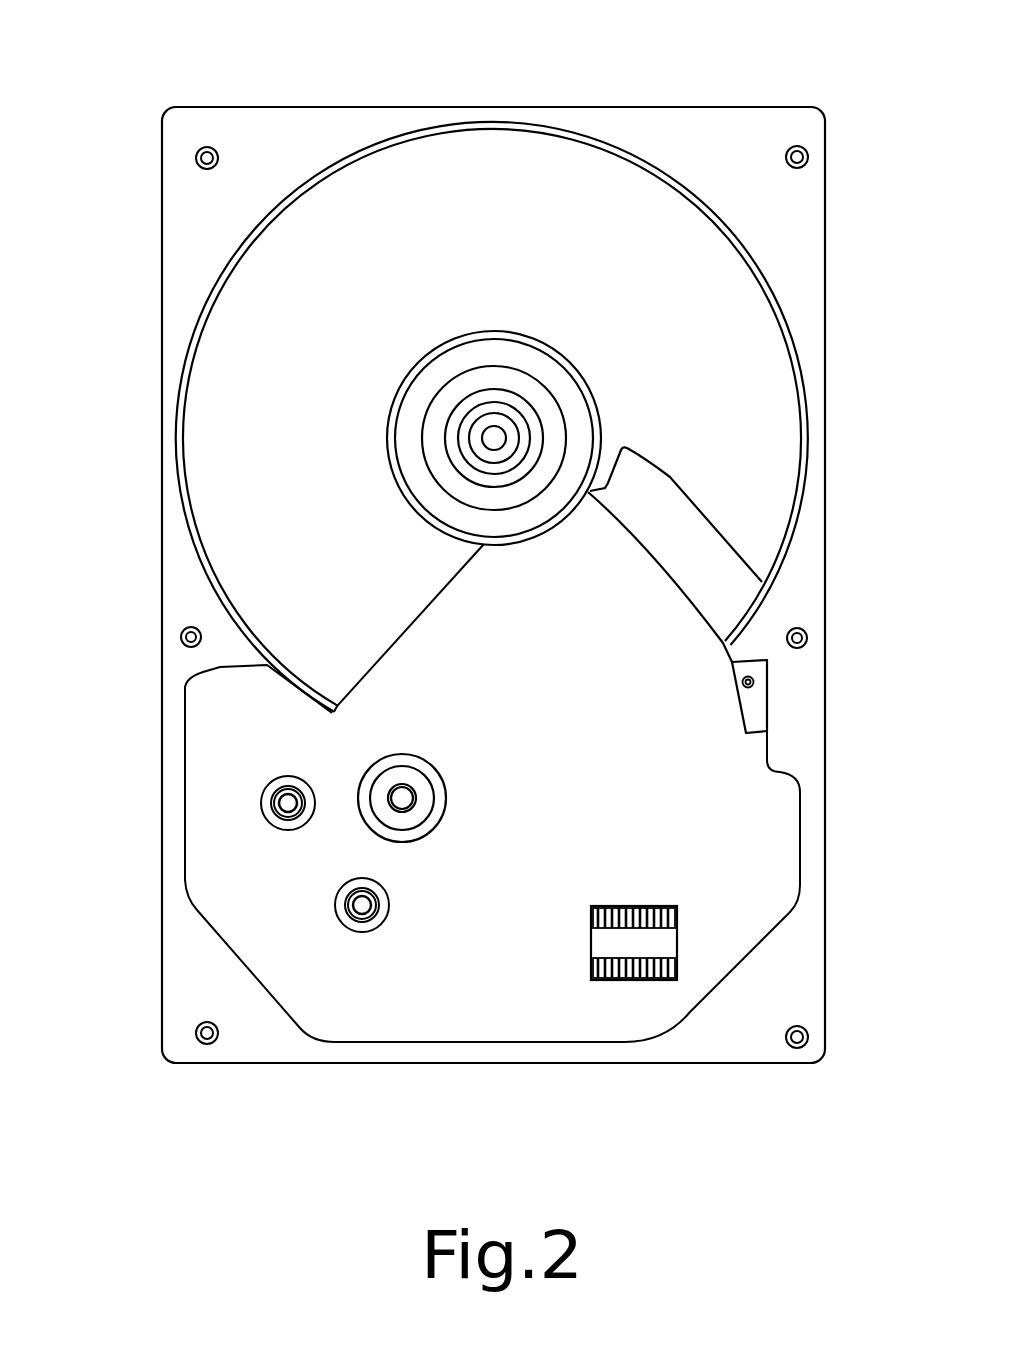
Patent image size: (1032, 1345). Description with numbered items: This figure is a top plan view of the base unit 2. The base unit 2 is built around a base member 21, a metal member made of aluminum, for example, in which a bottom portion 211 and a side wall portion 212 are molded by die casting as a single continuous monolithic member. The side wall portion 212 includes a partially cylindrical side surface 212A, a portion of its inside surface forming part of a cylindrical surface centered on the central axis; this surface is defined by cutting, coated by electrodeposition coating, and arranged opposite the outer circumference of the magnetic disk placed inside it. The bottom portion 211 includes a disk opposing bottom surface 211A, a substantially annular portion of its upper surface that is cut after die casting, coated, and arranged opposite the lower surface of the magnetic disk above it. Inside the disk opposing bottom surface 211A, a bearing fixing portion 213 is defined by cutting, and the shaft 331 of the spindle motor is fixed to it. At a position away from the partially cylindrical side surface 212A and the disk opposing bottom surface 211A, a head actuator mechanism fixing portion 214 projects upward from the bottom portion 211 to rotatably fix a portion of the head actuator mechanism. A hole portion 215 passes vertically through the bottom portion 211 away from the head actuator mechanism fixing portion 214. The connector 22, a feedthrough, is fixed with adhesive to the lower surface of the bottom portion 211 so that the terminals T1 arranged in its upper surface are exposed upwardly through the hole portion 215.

The base unit 2 is at (621, 66).
The base member 21 is at (745, 100).
The bottom portion 211 is at (423, 1015).
The disk opposing bottom surface 211A is at (237, 375).
The side wall portion 212 is at (192, 593).
The partially cylindrical side surface 212A is at (343, 160).
The bearing fixing portion 213 is at (540, 425).
The head actuator mechanism fixing portion 214 is at (433, 782).
The hole portion 215 is at (680, 920).
The connector 22 is at (663, 938).
The shaft 331 is at (495, 427).
The terminals T1 is at (592, 982).